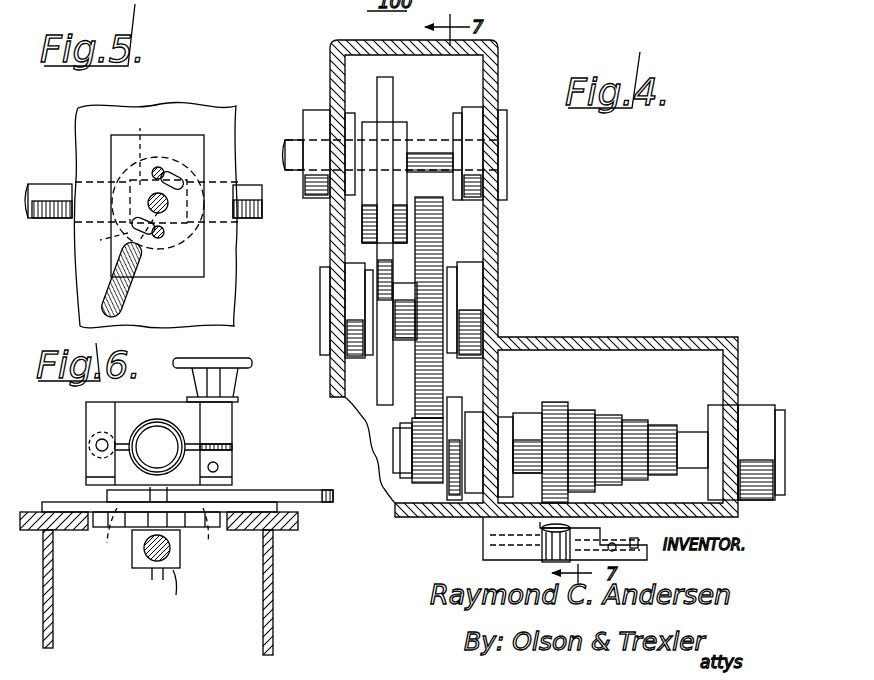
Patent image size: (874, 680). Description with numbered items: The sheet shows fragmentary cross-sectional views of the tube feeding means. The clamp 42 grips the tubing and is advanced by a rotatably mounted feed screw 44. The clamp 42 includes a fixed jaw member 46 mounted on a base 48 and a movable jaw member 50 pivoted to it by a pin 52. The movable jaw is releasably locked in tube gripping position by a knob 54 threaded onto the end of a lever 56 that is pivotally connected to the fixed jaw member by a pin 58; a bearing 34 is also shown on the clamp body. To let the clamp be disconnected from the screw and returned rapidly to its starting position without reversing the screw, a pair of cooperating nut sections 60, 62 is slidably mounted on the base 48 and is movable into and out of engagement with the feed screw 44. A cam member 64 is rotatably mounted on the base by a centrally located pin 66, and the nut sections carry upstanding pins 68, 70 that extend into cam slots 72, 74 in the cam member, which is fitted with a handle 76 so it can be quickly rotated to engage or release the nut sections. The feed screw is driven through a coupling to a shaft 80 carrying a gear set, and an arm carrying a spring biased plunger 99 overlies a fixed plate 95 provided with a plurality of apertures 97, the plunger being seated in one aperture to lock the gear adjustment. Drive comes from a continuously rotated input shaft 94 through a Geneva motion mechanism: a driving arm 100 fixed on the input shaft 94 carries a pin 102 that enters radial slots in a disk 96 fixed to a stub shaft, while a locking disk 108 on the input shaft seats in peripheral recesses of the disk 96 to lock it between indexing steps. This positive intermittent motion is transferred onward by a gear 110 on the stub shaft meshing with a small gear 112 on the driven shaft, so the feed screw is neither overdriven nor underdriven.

In FIG. 6, the bearing 34 is at (187, 436).
In FIG. 6, the clamp 42 is at (82, 412).
In FIG. 5, the feed screw 44 is at (245, 187).
In FIG. 6, the feed screw 44 is at (150, 556).
In FIG. 6, the fixed jaw member 46 is at (84, 483).
In FIG. 6, the base 48 is at (75, 506).
In FIG. 6, the movable jaw member 50 is at (175, 405).
In FIG. 6, the pin 52 is at (100, 445).
In FIG. 6, the knob 54 is at (236, 358).
In FIG. 6, the lever 56 is at (222, 417).
In FIG. 6, the pin 58 is at (220, 466).
In FIG. 5, the nut section 60 is at (133, 146).
In FIG. 6, the nut section 60 is at (179, 594).
In FIG. 6, the nut section 62 is at (134, 553).
In FIG. 4, the nut section 62 is at (560, 398).
In FIG. 5, the cam member 64 is at (128, 233).
In FIG. 5, the pin 66 is at (152, 197).
In FIG. 6, the pin 66 is at (173, 447).
In FIG. 5, the upstanding pin 68 is at (167, 233).
In FIG. 6, the upstanding pin 68 is at (215, 536).
In FIG. 5, the upstanding pin 70 is at (160, 167).
In FIG. 6, the upstanding pin 70 is at (105, 534).
In FIG. 5, the cam slot 72 is at (150, 243).
In FIG. 5, the cam slot 74 is at (177, 170).
In FIG. 5, the handle 76 is at (108, 296).
In FIG. 6, the handle 76 is at (313, 494).
In FIG. 4, the shaft 80 is at (518, 447).
In FIG. 4, the input shaft 94 is at (427, 150).
In FIG. 4, the fixed plate 95 is at (487, 554).
In FIG. 4, the disk 96 is at (413, 283).
In FIG. 4, the apertures 97 is at (637, 538).
In FIG. 4, the spring biased plunger 99 is at (555, 540).
In FIG. 4, the driving arm 100 is at (372, 208).
In FIG. 4, the pin 102 is at (393, 235).
In FIG. 4, the locking disk 108 is at (383, 88).
In FIG. 4, the gear 110 is at (438, 240).
In FIG. 4, the small gear 112 is at (422, 480).